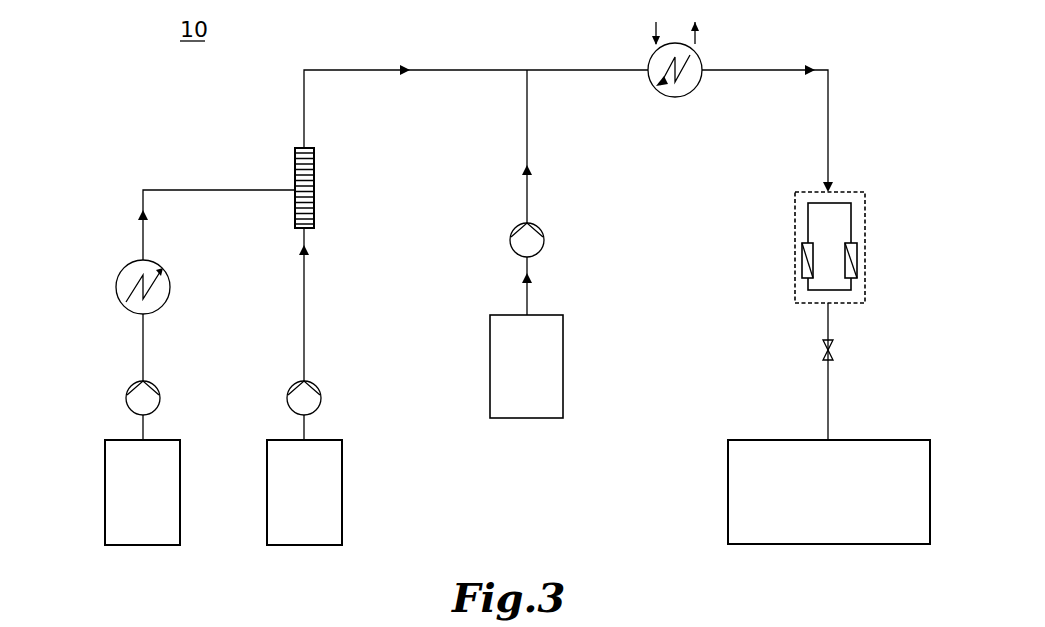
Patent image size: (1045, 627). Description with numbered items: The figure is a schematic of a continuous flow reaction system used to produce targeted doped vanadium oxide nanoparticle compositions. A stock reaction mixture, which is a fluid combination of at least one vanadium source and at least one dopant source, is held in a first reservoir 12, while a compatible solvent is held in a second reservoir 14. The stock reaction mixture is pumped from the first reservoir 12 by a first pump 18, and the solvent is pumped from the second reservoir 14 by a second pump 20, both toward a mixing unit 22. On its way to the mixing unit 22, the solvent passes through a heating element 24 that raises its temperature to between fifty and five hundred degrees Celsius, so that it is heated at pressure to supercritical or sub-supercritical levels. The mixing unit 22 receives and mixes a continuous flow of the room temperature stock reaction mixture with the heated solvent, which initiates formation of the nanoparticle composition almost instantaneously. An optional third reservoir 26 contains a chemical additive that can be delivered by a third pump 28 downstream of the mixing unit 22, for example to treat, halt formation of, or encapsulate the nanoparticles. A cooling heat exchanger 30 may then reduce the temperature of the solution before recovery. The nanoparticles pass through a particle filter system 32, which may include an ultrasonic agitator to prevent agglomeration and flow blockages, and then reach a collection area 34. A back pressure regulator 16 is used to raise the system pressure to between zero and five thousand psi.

The first reservoir 12 is at (328, 494).
The second reservoir 14 is at (118, 490).
The back pressure regulator 16 is at (838, 352).
The first pump 18 is at (315, 386).
The second pump 20 is at (136, 386).
The mixing unit 22 is at (318, 176).
The heating element 24 is at (128, 276).
The third reservoir 26 is at (545, 355).
The third pump 28 is at (540, 232).
The cooling heat exchanger 30 is at (692, 86).
The particle filter system 32 is at (858, 213).
The collection area 34 is at (757, 452).